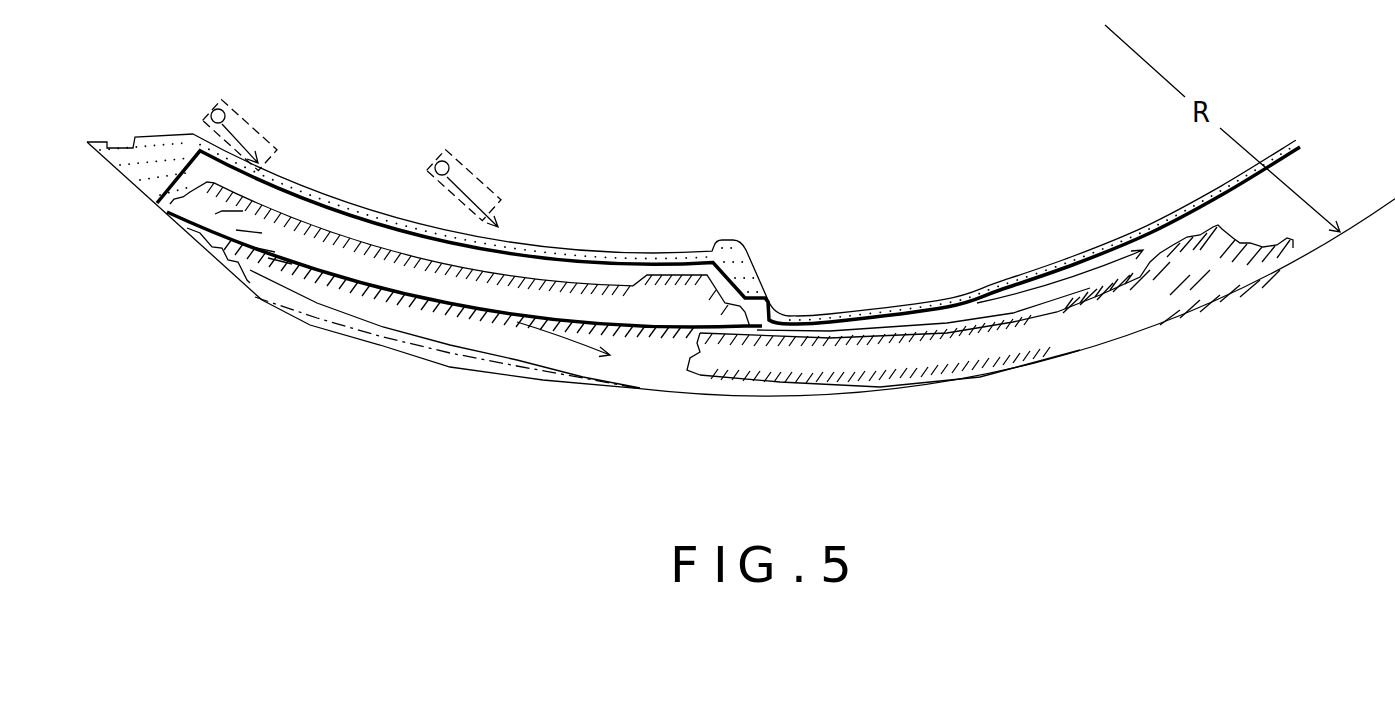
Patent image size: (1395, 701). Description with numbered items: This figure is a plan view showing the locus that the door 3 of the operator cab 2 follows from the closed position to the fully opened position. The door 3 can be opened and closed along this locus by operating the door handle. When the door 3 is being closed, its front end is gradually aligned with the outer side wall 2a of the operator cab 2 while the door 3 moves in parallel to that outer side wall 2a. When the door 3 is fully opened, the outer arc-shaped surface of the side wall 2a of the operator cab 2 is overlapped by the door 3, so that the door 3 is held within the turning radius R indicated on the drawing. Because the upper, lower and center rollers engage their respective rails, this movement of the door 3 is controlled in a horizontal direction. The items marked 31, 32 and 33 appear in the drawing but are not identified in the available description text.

The operator cab 2 is at (604, 252).
The outer side wall 2a is at (832, 336).
The door 3 is at (423, 303).
The cutting tool 31 is at (212, 108).
The cutting tool 32 is at (432, 163).
The cut portion 33 is at (1060, 290).